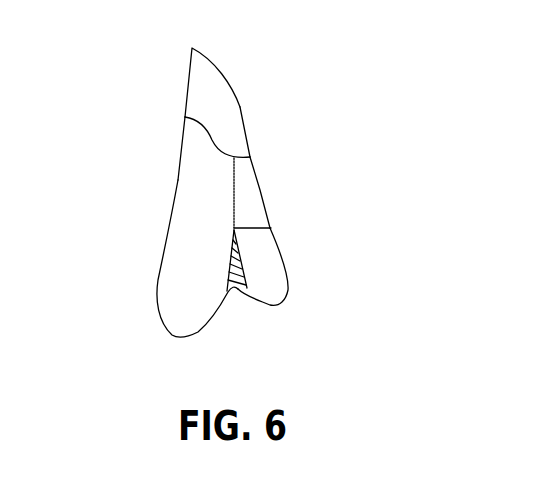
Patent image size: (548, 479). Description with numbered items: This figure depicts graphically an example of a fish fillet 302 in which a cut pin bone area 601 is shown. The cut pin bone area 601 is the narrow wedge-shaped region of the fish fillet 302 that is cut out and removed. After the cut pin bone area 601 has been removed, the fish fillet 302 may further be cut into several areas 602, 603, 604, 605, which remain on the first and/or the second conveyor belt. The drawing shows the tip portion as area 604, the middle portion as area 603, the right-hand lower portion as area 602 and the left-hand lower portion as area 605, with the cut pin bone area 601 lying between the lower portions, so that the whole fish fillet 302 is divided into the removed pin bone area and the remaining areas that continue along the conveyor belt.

The fish fillet 302 is at (374, 110).
The cut pin bone area 601 is at (240, 280).
The fillet area 602 is at (275, 278).
The fillet area 603 is at (252, 197).
The fillet area 604 is at (238, 110).
The fillet area 605 is at (177, 245).